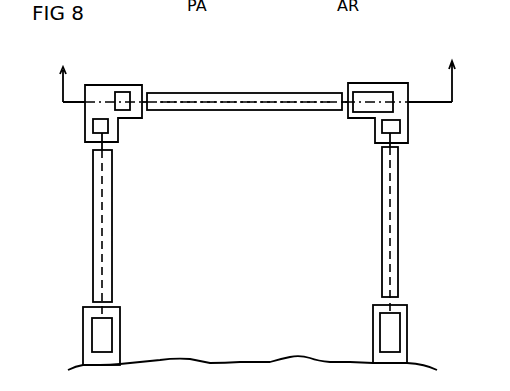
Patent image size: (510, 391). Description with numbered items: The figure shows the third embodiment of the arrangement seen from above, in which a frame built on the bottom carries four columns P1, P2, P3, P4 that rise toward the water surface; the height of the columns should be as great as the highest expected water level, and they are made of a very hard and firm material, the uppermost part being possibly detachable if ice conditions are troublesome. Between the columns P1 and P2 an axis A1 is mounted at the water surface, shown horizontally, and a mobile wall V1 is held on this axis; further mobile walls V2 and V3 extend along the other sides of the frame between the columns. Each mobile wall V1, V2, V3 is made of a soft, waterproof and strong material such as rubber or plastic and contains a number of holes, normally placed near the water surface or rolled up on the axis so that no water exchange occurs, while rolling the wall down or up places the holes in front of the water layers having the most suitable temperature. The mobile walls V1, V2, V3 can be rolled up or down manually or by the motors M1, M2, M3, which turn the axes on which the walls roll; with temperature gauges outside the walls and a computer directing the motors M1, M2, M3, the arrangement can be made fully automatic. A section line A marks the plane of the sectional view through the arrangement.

The section line A- A is at (254, 69).
The column P1 is at (100, 84).
The column P2 is at (372, 82).
The column P3 is at (407, 311).
The column P4 is at (84, 316).
The motor M1 is at (386, 91).
The motor M2 is at (400, 338).
The motor M3 is at (92, 333).
The mobile wall V1 is at (225, 92).
The mobile wall V2 is at (398, 228).
The mobile wall V3 is at (93, 229).
The axis A1 is at (282, 102).